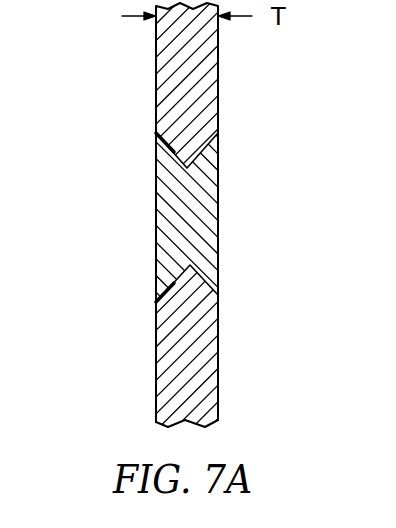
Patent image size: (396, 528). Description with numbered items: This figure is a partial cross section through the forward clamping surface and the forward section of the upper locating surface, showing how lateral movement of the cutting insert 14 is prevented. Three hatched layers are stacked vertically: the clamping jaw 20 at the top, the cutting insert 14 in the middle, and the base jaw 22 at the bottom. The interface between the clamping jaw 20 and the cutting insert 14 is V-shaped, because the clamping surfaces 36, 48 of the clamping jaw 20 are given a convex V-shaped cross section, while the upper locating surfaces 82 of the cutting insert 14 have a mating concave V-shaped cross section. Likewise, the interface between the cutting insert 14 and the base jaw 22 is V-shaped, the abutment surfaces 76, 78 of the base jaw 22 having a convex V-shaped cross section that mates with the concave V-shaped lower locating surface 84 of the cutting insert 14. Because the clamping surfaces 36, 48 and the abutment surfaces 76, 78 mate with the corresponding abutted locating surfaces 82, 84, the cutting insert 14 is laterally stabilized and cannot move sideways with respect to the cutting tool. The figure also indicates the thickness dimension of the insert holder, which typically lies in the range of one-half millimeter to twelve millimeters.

The clamping jaw 20 is at (196, 70).
The cutting insert 14 is at (185, 225).
The base jaw 22 is at (188, 353).
The clamping surface 36 is at (256, 150).
The clamping surface 48 is at (202, 148).
The upper locating surface 82 is at (169, 146).
The abutment surface 76 is at (115, 266).
The abutment surface 78 is at (178, 280).
The lower locating surface 84 is at (178, 285).